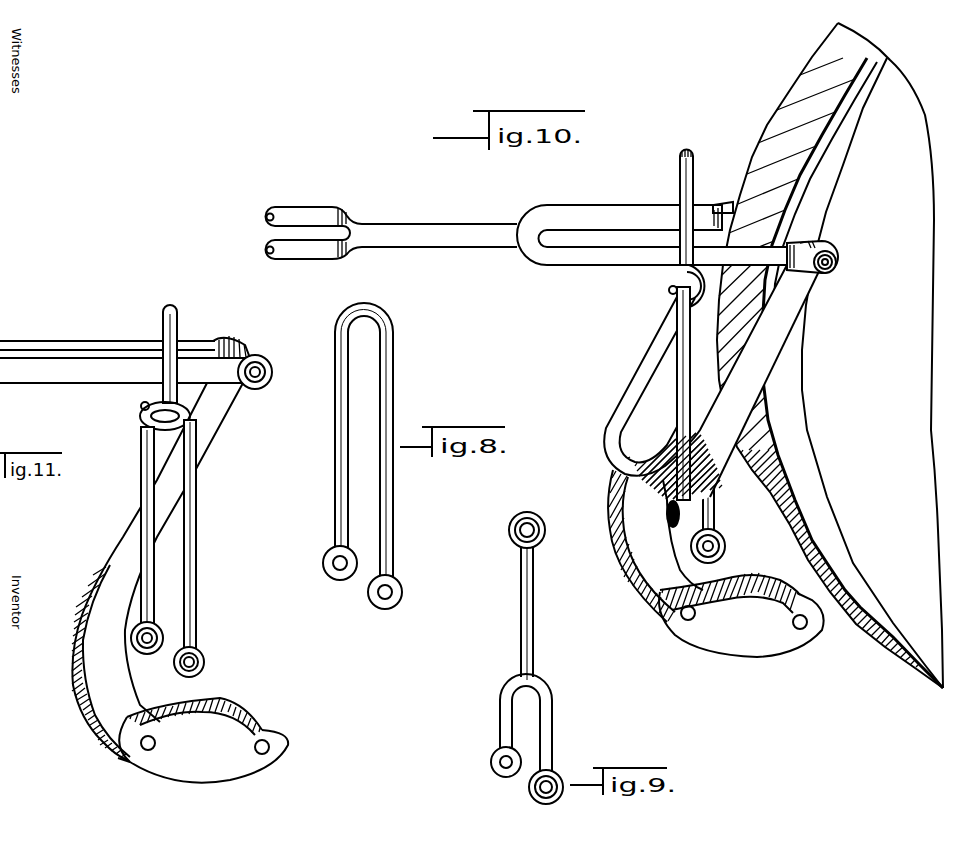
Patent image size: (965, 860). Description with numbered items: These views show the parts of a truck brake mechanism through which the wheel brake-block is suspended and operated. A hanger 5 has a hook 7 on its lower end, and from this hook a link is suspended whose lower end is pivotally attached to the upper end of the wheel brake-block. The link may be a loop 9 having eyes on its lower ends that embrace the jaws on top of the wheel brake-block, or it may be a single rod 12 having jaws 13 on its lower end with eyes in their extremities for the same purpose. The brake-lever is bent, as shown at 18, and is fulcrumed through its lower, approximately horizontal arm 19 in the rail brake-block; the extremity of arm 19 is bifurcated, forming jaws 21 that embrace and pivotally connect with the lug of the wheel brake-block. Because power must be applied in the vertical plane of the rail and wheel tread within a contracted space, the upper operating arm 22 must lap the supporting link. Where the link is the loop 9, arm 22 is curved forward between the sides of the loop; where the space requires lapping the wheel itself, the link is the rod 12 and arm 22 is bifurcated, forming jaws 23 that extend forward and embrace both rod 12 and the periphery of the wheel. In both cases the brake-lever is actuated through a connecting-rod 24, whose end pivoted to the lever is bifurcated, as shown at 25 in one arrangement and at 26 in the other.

In FIG. 10, the hanger 5 is at (678, 177).
In FIG. 11, the hanger 5 is at (163, 318).
In FIG. 10, the hook 7 is at (670, 292).
In FIG. 11, the hook 7 is at (140, 417).
In FIG. 11, the loop 9 is at (198, 507).
In FIG. 8, the loop 9 is at (393, 367).
In FIG. 10, the rod 12 is at (678, 383).
In FIG. 9, the rod 12 is at (520, 608).
In FIG. 10, the jaws 13 is at (712, 523).
In FIG. 9, the jaws 13 is at (563, 730).
In FIG. 10, the bend of brake-lever 18 is at (611, 495).
In FIG. 11, the bend of brake-lever 18 is at (75, 693).
In FIG. 11, the lower arm of brake-lever 19 is at (128, 755).
In FIG. 10, the jaws 21 is at (768, 563).
In FIG. 11, the jaws 21 is at (277, 700).
In FIG. 10, the upper operating arm of brake-lever 22 is at (612, 452).
In FIG. 11, the upper operating arm of brake-lever 22 is at (98, 560).
In FIG. 10, the jaws 23 is at (658, 340).
In FIG. 10, the connecting-rod 24 is at (477, 248).
In FIG. 10, the bifurcated end of connecting-rod 25 is at (617, 182).
In FIG. 11, the bifurcated end of connecting-rod 26 is at (83, 335).